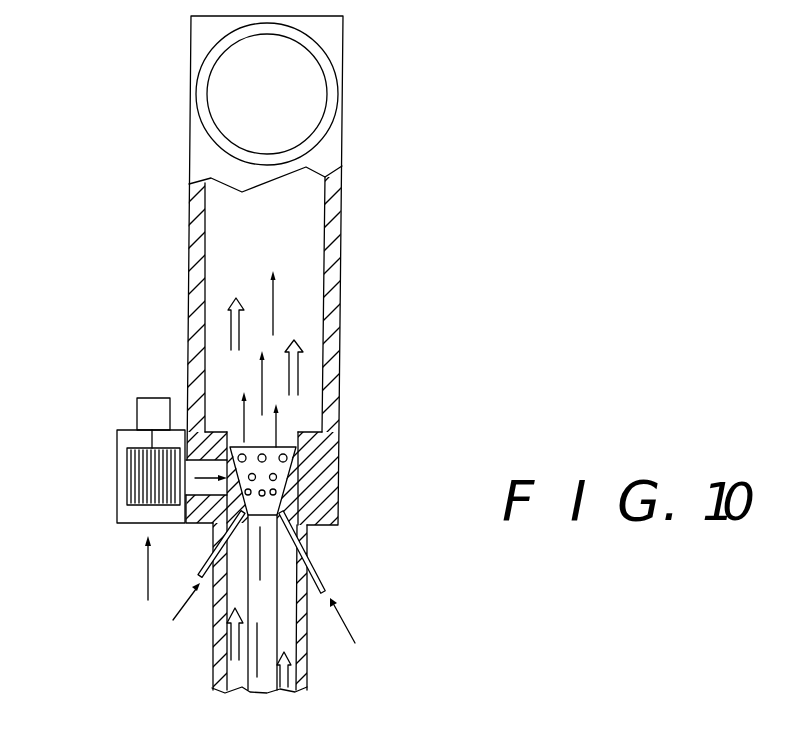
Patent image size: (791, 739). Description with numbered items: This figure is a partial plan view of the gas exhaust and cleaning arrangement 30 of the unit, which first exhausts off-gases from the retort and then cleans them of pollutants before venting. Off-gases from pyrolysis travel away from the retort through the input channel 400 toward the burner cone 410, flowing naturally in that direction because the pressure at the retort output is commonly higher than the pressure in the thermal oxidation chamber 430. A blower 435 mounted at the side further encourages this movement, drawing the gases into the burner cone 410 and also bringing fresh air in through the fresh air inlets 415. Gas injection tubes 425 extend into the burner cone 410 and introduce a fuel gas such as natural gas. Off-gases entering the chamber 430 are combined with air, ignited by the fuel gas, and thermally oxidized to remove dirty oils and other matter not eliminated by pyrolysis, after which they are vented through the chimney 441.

The gas exhaust and cleaning arrangement 30 is at (366, 245).
The input channel 400 is at (263, 613).
The burner cone 410 is at (280, 477).
The fresh air inlets 415 is at (286, 459).
The gas injection tubes 425 is at (318, 578).
The thermal oxidation chamber 430 is at (289, 240).
The blower 435 is at (136, 474).
The chimney 441 is at (330, 94).